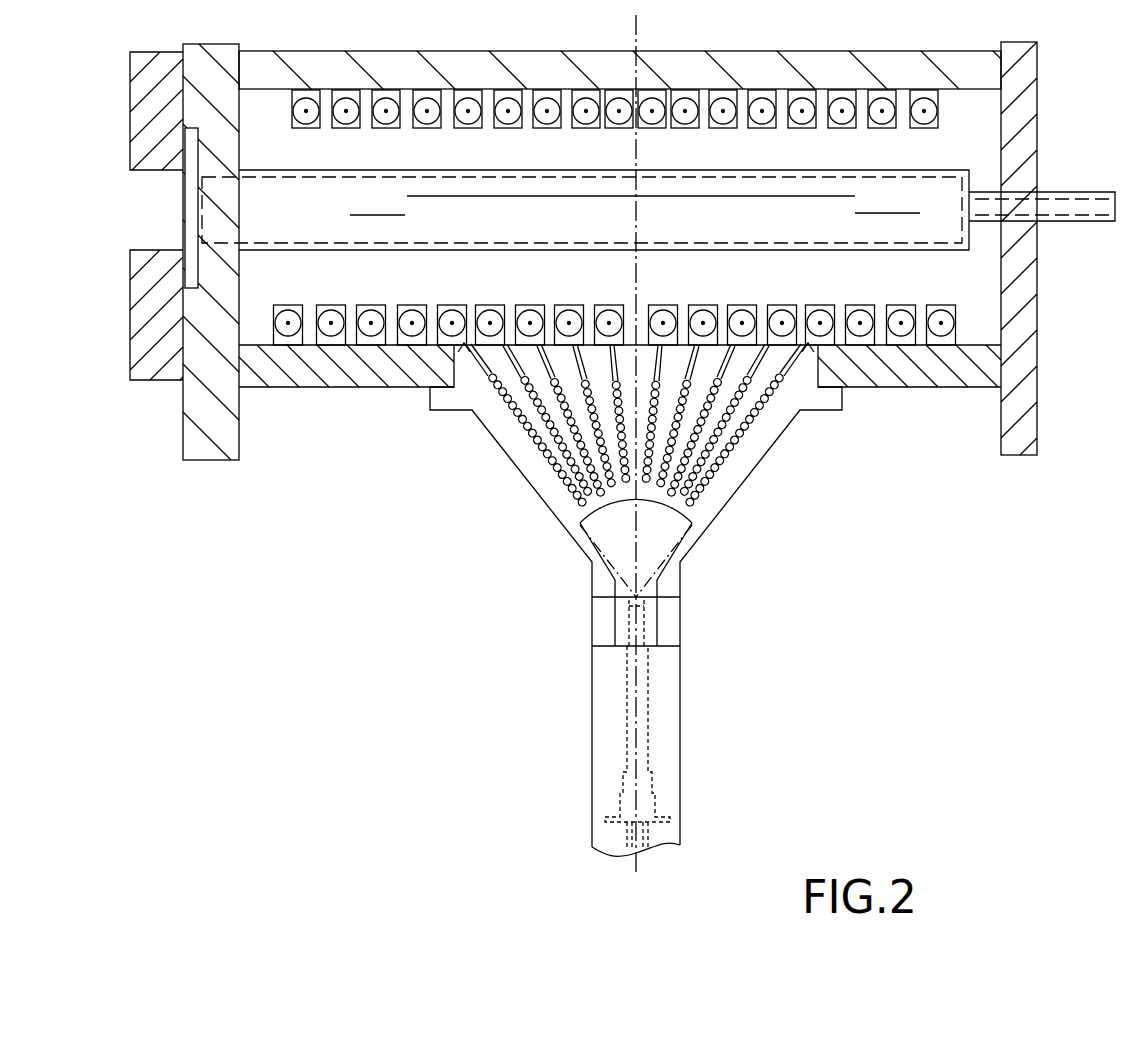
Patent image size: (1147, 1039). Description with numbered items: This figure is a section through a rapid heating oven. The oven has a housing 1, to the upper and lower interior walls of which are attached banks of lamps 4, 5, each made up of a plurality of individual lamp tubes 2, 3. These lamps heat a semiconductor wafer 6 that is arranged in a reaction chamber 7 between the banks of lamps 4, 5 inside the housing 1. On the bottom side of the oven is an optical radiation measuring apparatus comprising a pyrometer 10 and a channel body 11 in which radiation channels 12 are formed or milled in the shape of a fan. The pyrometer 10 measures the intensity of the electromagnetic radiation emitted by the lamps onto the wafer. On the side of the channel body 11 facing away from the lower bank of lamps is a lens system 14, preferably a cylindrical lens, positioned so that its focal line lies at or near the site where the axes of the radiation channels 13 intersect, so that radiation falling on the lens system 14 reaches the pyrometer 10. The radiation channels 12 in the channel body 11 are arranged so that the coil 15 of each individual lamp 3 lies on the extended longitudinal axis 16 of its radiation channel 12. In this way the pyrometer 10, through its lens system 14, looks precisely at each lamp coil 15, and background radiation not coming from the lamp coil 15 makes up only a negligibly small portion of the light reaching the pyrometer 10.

The housing 1 is at (295, 362).
The individual lamp tube 2 is at (293, 112).
The individual lamp tube 3 is at (286, 322).
The bank of lamps 4 is at (367, 125).
The bank of lamps 5 is at (350, 311).
The semiconductor wafer 6 is at (430, 197).
The reaction chamber 7 is at (931, 229).
The pyrometer 10 is at (638, 680).
The channel body 11 is at (723, 488).
The radiation channel 12 is at (757, 423).
The radiation channel 13 is at (813, 362).
The lens system 14 is at (640, 595).
The coil 15 is at (453, 323).
The extended longitudinal axis 16 is at (810, 333).